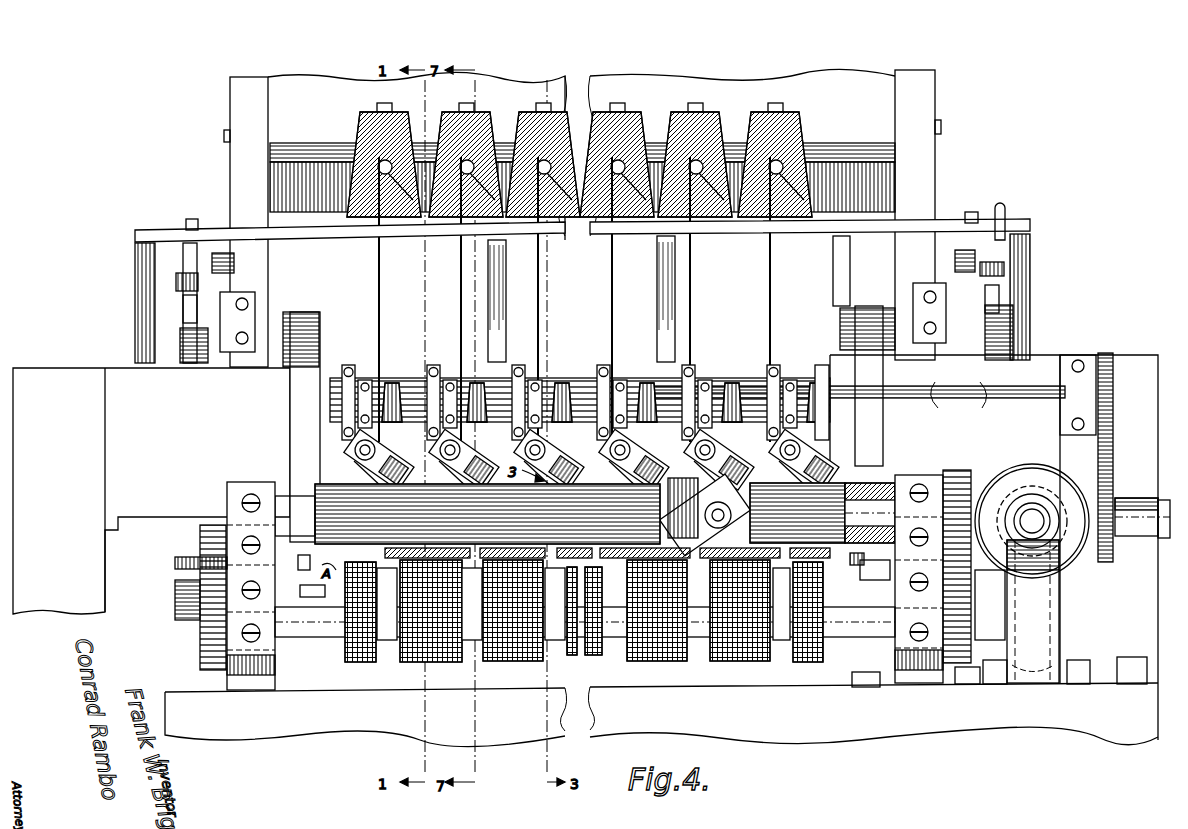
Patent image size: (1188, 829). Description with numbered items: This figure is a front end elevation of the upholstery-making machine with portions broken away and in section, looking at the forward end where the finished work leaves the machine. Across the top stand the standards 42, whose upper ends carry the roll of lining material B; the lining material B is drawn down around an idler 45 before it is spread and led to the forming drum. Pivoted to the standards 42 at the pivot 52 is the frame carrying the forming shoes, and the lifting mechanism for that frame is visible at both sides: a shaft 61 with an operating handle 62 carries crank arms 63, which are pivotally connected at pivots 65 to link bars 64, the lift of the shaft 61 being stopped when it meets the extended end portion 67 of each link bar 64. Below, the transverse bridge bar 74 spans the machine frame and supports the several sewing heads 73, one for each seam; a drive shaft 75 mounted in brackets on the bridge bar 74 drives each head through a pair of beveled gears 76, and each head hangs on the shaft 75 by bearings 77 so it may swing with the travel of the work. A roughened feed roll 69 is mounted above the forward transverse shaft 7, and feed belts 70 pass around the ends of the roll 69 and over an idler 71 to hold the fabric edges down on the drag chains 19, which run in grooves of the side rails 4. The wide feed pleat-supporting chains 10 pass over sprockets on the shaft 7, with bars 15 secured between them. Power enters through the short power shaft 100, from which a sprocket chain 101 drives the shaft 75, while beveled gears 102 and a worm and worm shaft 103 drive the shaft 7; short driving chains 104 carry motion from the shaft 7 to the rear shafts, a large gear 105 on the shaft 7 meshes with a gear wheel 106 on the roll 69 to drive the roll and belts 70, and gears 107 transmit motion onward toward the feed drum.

The grooved side rails 4 is at (312, 585).
The forward transverse shaft 7 is at (297, 632).
The feed pleat-supporting chains 10 is at (414, 662).
The bars 15 is at (583, 604).
The drag chain 19 is at (175, 563).
The standards 42 is at (238, 178).
The idler 45 is at (268, 165).
The pivot 52 is at (212, 262).
The shaft 61 is at (180, 343).
The operating handle 62 is at (1006, 213).
The crank arms 63 is at (205, 365).
The link bars 64 is at (190, 321).
The pivots 65 is at (176, 286).
The extended end portion 67 is at (192, 218).
The roughened feed roll 69 is at (330, 502).
The feed belts 70 is at (297, 432).
The idler 71 is at (322, 322).
The sewing heads 73 is at (690, 473).
The transverse bridge bar 74 is at (151, 491).
The drive shaft 75 is at (1022, 386).
The beveled gears 76 is at (712, 367).
The bearings 77 is at (530, 365).
The power shaft 100 is at (1165, 512).
The sprocket chain 101 is at (1106, 434).
The beveled gears 102 is at (1040, 480).
The worm and worm shaft 103 is at (1040, 545).
The short driving chains 104 is at (360, 662).
The large gear 105 is at (956, 690).
The gear wheel 106 is at (955, 470).
The gears 107 is at (200, 613).
The lining material B is at (275, 198).